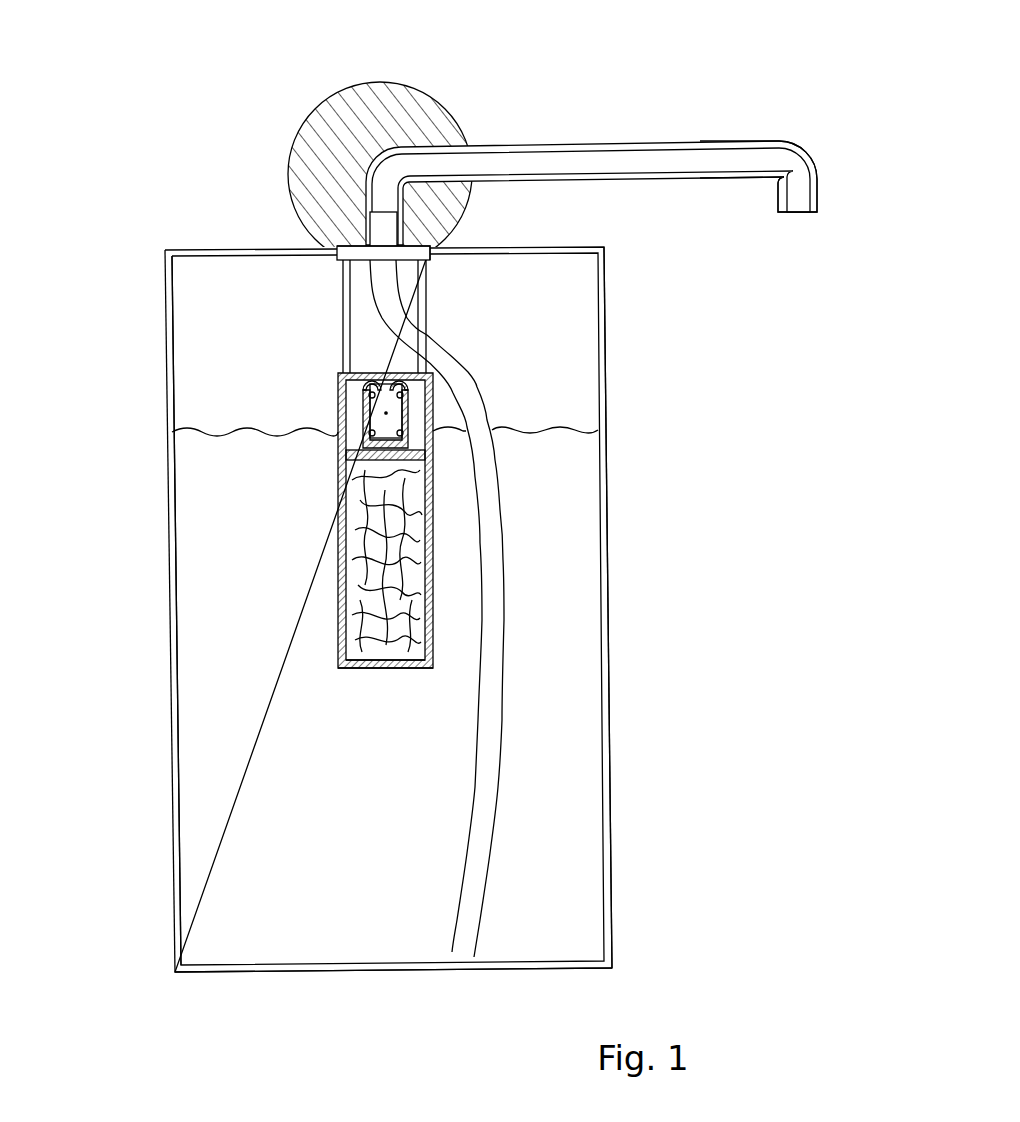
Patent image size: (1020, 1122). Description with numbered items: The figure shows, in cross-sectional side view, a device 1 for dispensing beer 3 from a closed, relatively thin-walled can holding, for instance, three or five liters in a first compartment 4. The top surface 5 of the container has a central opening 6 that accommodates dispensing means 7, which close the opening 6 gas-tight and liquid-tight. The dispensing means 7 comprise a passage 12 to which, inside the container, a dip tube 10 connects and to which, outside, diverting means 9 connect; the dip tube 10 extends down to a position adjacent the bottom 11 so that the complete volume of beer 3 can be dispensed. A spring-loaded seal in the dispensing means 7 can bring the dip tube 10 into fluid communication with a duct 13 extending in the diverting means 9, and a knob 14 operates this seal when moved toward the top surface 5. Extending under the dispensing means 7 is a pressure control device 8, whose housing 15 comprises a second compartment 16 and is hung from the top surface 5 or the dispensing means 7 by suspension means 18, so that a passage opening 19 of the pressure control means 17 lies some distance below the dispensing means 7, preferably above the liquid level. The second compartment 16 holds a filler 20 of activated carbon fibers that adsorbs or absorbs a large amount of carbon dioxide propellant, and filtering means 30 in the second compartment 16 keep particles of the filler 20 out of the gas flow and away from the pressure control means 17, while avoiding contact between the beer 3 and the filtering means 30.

The device 1 is at (600, 413).
The beer 3 is at (557, 533).
The first compartment 4 is at (576, 864).
The top surface 5 is at (192, 250).
The central opening 6 is at (338, 261).
The dispensing means 7 is at (437, 247).
The pressure control device 8 is at (373, 684).
The diverting means 9 is at (462, 148).
The dip tube 10 is at (493, 598).
The bottom 11 is at (372, 970).
The passage 12 is at (383, 233).
The duct 13 is at (715, 162).
The knob 14 is at (380, 103).
The housing 15 is at (340, 597).
The second compartment 16 is at (377, 550).
The pressure control means 17 is at (348, 423).
The suspension means 18 is at (440, 276).
The passage opening 19 is at (385, 377).
The filler 20 is at (388, 640).
The filtering means 30 is at (426, 454).